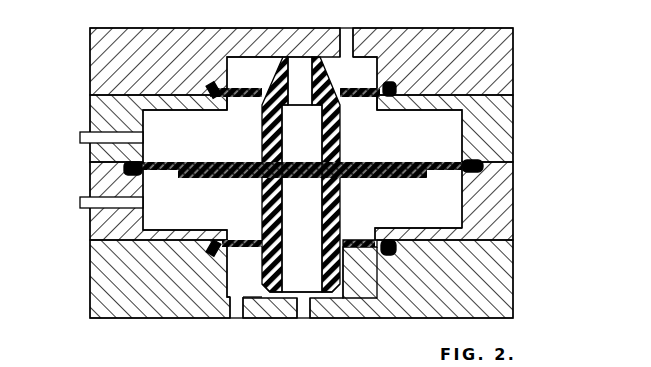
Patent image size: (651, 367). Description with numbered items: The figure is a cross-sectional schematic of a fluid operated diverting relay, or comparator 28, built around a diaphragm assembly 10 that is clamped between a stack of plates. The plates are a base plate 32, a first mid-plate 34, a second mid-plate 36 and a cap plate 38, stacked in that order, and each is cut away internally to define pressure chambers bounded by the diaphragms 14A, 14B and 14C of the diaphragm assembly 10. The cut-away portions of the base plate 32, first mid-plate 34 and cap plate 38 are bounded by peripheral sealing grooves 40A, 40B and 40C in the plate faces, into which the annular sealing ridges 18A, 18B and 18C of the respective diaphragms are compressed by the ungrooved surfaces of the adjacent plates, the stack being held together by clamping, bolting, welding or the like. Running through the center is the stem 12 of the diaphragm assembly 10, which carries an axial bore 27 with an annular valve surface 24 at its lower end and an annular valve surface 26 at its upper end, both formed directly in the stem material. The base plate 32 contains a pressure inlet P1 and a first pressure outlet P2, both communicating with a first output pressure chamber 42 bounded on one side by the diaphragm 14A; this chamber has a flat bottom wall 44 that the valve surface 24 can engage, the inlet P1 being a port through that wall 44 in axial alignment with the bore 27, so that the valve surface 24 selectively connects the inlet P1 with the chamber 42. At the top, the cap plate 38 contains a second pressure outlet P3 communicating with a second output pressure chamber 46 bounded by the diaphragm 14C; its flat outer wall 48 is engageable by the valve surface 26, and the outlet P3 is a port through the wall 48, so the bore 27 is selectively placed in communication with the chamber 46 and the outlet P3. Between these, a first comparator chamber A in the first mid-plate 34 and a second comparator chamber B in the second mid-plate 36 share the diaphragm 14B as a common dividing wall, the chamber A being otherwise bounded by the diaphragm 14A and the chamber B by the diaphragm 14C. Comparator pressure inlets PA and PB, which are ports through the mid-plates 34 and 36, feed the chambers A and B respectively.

The diaphragm assembly 10 is at (258, 133).
The stem 12 is at (262, 192).
The diaphragm 14A is at (355, 240).
The diaphragm 14B is at (443, 172).
The diaphragm 14C is at (358, 112).
The sealing ridge 18A is at (390, 243).
The sealing ridge 18B is at (484, 167).
The sealing ridge 18C is at (396, 86).
The annular valve surface 24 is at (334, 290).
The annular valve surface 26 is at (291, 57).
The axial bore 27 is at (311, 185).
The comparator 28 is at (241, 20).
The base plate 32 is at (503, 283).
The first mid-plate 34 is at (498, 210).
The second mid-plate 36 is at (498, 125).
The cap plate 38 is at (505, 72).
The sealing groove 40A is at (208, 257).
The sealing groove 40B is at (123, 168).
The sealing groove 40C is at (211, 86).
The first output pressure chamber 42 is at (258, 291).
The flat bottom wall 44 is at (357, 300).
The second output pressure chamber 46 is at (258, 81).
The flat outer wall 48 is at (330, 58).
The pressure inlet P1 is at (300, 326).
The first pressure outlet P2 is at (237, 326).
The second pressure outlet P3 is at (352, 28).
The first comparator pressure inlet PA is at (75, 202).
The second comparator pressure inlet PB is at (75, 137).
The first comparator chamber A is at (178, 216).
The second comparator chamber B is at (178, 143).